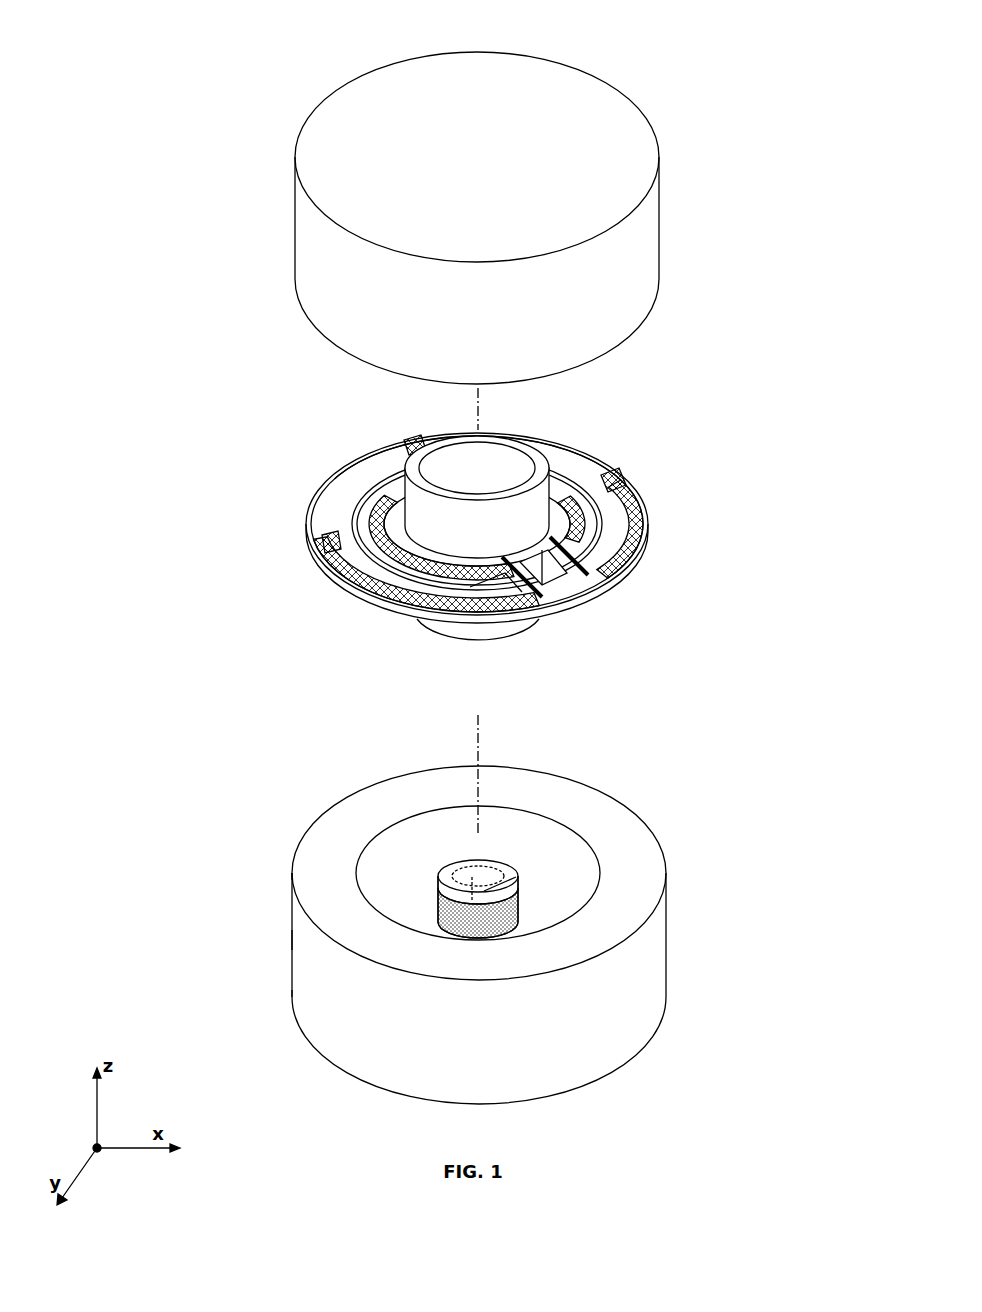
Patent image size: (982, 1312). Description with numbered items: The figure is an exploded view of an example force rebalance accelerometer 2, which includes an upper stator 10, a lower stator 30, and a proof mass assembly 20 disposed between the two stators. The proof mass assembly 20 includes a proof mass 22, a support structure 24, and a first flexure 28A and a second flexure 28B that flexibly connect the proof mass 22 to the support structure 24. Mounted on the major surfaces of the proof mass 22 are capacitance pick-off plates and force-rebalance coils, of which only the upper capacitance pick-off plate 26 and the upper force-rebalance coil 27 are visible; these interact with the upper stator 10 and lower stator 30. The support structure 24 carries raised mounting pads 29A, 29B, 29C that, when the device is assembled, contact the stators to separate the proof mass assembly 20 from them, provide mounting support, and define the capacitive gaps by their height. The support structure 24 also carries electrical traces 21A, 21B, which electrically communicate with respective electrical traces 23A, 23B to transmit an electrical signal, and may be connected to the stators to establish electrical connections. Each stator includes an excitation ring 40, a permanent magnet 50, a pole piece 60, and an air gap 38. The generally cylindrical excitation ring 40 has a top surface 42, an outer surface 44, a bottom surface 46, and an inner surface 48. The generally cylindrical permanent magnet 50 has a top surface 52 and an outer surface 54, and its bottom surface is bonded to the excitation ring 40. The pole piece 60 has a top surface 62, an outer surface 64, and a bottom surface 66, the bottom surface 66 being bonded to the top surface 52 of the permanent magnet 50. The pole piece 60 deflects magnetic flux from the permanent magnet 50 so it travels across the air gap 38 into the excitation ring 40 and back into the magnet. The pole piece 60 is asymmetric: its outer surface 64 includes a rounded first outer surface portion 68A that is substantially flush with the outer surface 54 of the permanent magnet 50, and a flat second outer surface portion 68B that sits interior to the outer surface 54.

The accelerometer 2 is at (146, 58).
The upper stator 10 is at (802, 72).
The proof mass assembly 20 is at (795, 438).
The electrical trace 21A is at (618, 560).
The electrical trace 21B is at (345, 578).
The proof mass 22 is at (580, 500).
The electrical trace 23A is at (560, 580).
The electrical trace 23B is at (522, 588).
The support structure 24 is at (393, 450).
The upper capacitance pick-off plate 26 is at (378, 513).
The upper force-rebalance coil 27 is at (513, 437).
The first flexure 28A is at (585, 546).
The second flexure 28B is at (523, 597).
The mounting pad 29A is at (620, 478).
The mounting pad 29B is at (322, 537).
The mounting pad 29C is at (413, 440).
The lower stator 30 is at (810, 843).
The air gap 38 is at (518, 822).
The excitation ring 40 is at (466, 1038).
The top surface 42 is at (310, 862).
The outer surface 44 is at (305, 940).
The bottom surface 46 is at (293, 1012).
The inner surface 48 is at (368, 845).
The permanent magnet 50 is at (466, 928).
The top surface 52 is at (510, 897).
The outer surface 54 is at (512, 917).
The pole piece 60 is at (466, 881).
The top surface 62 is at (500, 866).
The outer surface 64 is at (453, 888).
The bottom surface 66 is at (505, 890).
The first outer surface portion 68A is at (440, 873).
The second outer surface portion 68B is at (480, 889).